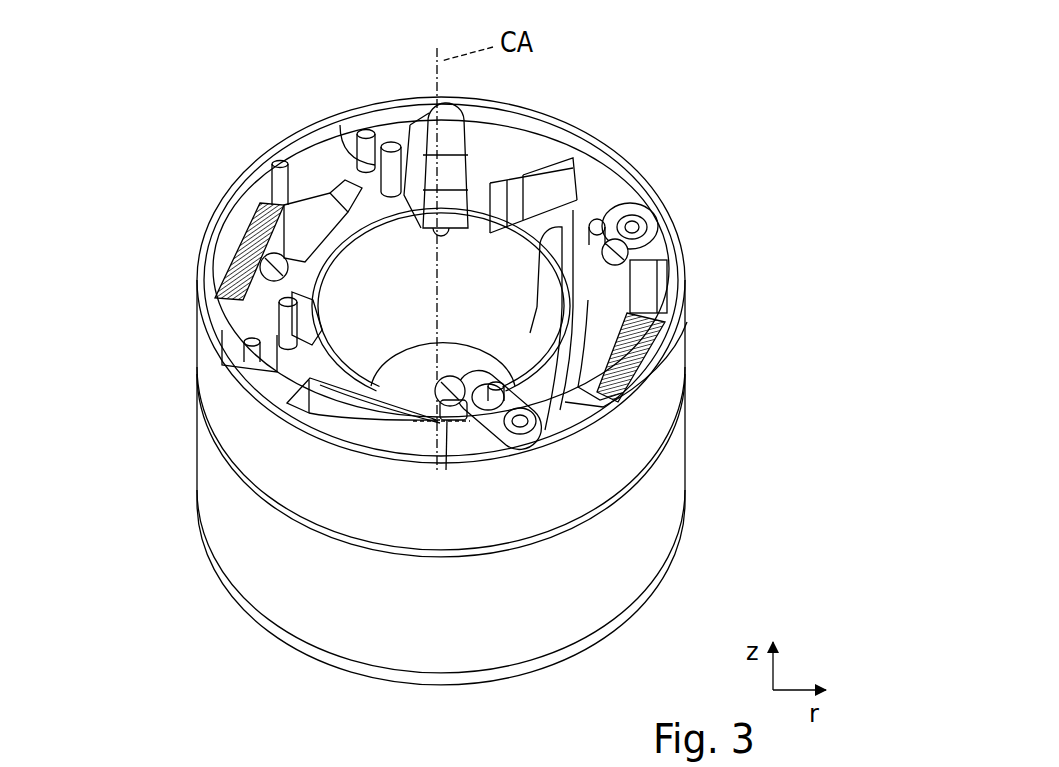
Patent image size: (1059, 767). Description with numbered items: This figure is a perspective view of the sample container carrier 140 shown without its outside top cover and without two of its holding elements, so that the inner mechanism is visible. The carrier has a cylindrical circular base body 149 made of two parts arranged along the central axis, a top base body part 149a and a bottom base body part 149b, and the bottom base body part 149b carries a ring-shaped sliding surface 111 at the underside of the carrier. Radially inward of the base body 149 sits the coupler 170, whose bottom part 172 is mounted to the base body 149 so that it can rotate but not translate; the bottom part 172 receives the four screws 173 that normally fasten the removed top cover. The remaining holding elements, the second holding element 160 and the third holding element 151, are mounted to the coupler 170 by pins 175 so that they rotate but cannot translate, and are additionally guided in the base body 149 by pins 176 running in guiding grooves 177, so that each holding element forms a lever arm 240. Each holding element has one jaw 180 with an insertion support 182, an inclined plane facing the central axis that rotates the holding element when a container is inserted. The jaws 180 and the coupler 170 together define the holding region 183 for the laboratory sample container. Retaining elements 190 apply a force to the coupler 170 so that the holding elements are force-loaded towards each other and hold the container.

The sample container carrier 140 is at (147, 116).
The sliding surface 111 is at (230, 597).
The base body 149 is at (372, 327).
The top base body part 149a is at (197, 318).
The bottom base body part 149b is at (205, 483).
The third holding element 151 is at (460, 203).
The second holding element 160 is at (553, 318).
The coupler 170 is at (325, 222).
The bottom part 172 is at (325, 210).
The screw 173 is at (453, 402).
The pin 175 is at (522, 395).
The pin 176 is at (523, 412).
The guiding groove 177 is at (335, 202).
The jaw 180 is at (548, 297).
The insertion support 182 is at (575, 208).
The holding region 183 is at (406, 308).
The retaining element 190 is at (250, 237).
The lever arm 240 is at (543, 207).